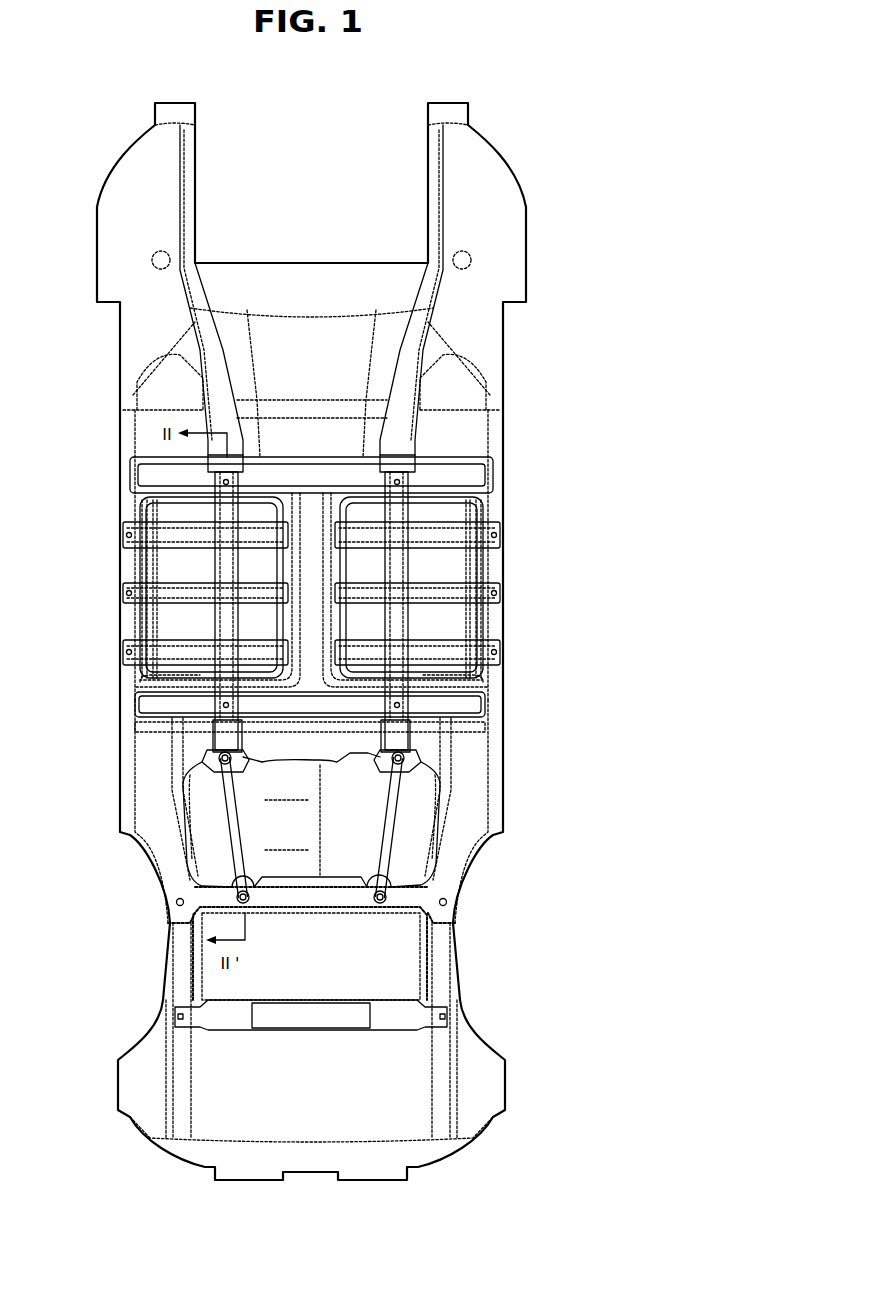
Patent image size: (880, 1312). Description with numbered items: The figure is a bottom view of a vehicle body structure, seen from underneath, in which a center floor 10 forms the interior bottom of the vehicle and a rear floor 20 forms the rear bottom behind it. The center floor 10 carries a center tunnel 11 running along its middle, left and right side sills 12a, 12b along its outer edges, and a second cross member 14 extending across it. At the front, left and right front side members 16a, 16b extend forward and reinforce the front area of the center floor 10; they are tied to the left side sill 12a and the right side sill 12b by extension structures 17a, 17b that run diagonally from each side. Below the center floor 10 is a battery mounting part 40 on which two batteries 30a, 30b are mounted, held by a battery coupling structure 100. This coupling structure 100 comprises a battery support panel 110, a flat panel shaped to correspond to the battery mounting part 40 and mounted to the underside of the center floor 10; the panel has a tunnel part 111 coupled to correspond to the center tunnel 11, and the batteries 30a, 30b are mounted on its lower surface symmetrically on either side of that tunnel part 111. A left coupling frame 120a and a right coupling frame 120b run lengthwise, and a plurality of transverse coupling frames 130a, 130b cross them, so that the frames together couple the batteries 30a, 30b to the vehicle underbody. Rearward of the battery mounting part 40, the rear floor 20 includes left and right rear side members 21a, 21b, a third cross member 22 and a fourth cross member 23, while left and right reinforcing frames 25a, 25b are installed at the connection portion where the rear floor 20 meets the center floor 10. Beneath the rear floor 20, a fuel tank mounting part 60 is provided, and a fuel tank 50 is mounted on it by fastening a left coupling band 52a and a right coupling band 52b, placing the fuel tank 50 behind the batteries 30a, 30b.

The center floor 10 is at (509, 422).
The center tunnel 11 is at (363, 443).
The tunnel part 111 is at (300, 540).
The left side sill 12a is at (495, 623).
The right side sill 12b is at (127, 621).
The transverse coupling frame 130a is at (457, 592).
The transverse coupling frame 130b is at (167, 592).
The left coupling frame 120a is at (475, 522).
The right coupling frame 120b is at (227, 500).
The battery 30a is at (448, 563).
The battery 30b is at (175, 566).
The battery mounting part 40 is at (490, 505).
The battery coupling structure 100 is at (130, 676).
The battery support panel 110 is at (167, 684).
The second cross member 14 is at (457, 703).
The left front side member 16a is at (437, 323).
The right front side member 16b is at (197, 322).
The extension structure 17a is at (467, 353).
The extension structure 17b is at (153, 355).
The rear floor 20 is at (463, 955).
The left rear side member 21a is at (478, 797).
The right rear side member 21b is at (152, 842).
The third cross member 22 is at (187, 750).
The fourth cross member 23 is at (317, 902).
The left reinforcing frame 25a is at (412, 728).
The right reinforcing frame 25b is at (225, 729).
The fuel tank 50 is at (412, 813).
The left coupling band 52a is at (425, 848).
The right coupling band 52b is at (240, 848).
The fuel tank mounting part 60 is at (441, 755).